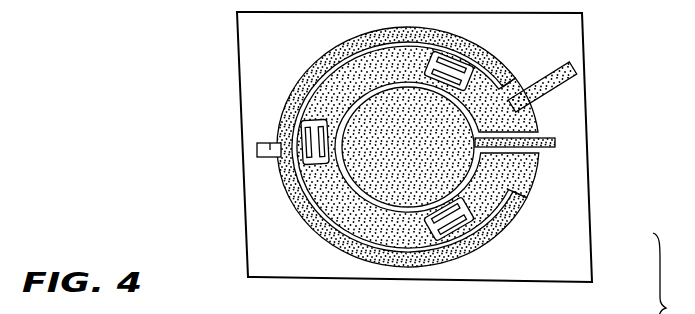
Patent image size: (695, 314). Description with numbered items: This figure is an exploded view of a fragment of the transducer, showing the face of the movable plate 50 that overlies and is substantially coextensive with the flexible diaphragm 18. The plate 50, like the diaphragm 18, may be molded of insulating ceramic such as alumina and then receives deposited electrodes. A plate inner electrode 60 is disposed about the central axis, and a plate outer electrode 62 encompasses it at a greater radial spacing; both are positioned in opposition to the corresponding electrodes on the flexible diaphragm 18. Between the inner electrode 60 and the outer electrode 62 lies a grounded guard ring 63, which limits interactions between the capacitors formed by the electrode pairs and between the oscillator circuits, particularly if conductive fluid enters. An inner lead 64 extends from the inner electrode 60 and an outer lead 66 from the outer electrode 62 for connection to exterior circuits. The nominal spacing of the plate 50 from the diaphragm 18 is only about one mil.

The movable plate 50 is at (592, 222).
The plate inner electrode 60 is at (373, 180).
The plate outer electrode 62 is at (285, 116).
The grounded guard ring 63 is at (522, 96).
The inner lead 64 is at (556, 143).
The outer lead 66 is at (258, 156).
The flexible diaphragm 18 is at (609, 273).